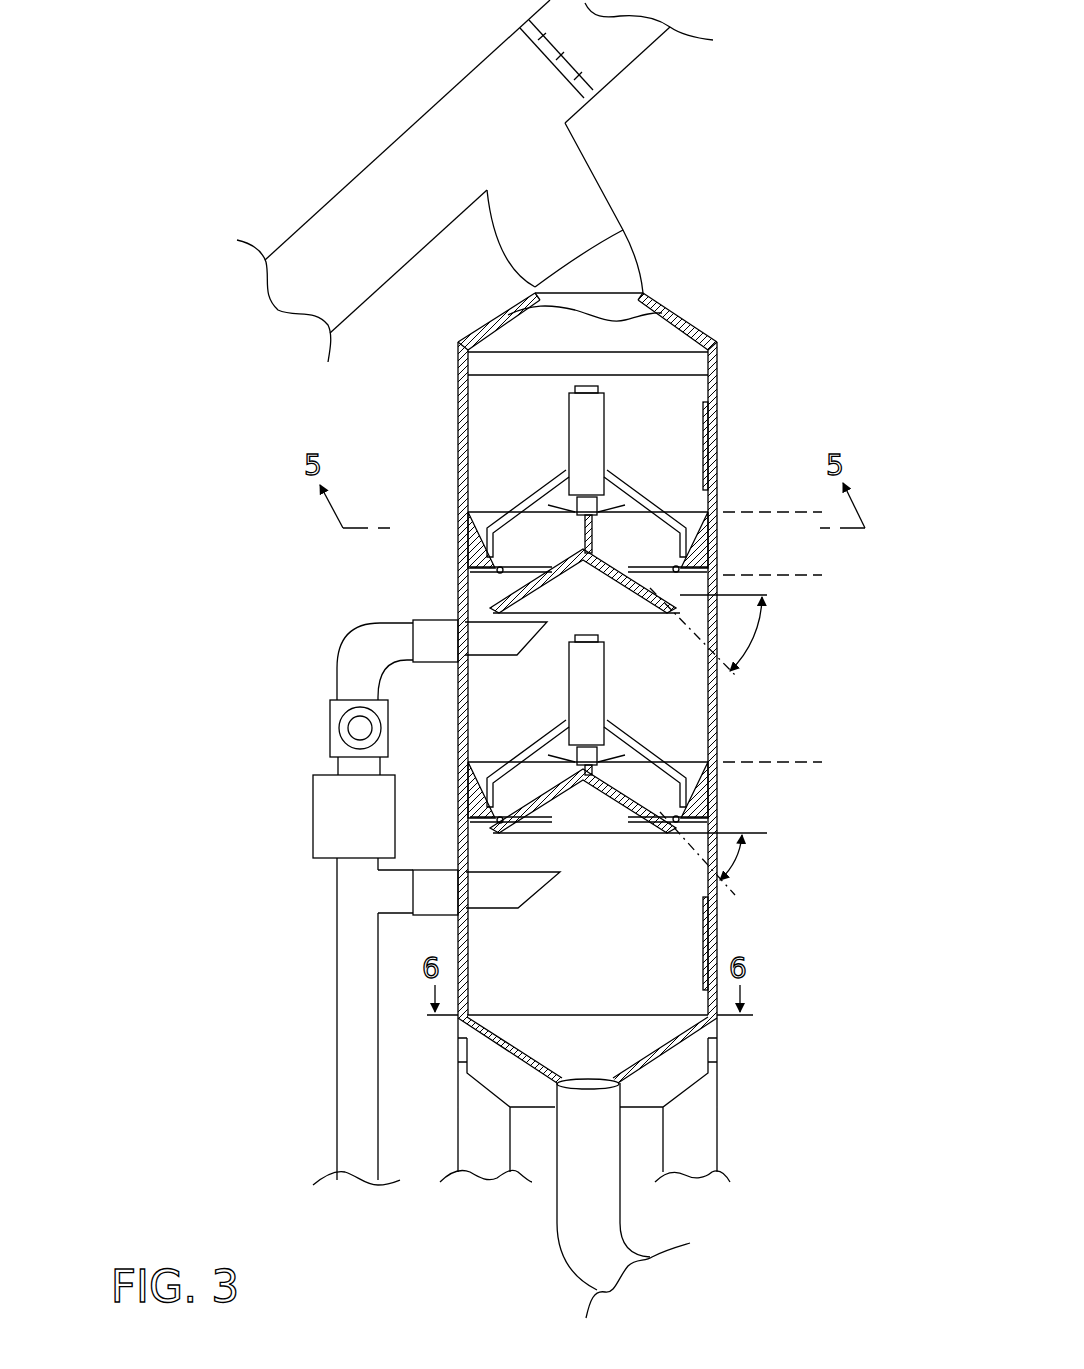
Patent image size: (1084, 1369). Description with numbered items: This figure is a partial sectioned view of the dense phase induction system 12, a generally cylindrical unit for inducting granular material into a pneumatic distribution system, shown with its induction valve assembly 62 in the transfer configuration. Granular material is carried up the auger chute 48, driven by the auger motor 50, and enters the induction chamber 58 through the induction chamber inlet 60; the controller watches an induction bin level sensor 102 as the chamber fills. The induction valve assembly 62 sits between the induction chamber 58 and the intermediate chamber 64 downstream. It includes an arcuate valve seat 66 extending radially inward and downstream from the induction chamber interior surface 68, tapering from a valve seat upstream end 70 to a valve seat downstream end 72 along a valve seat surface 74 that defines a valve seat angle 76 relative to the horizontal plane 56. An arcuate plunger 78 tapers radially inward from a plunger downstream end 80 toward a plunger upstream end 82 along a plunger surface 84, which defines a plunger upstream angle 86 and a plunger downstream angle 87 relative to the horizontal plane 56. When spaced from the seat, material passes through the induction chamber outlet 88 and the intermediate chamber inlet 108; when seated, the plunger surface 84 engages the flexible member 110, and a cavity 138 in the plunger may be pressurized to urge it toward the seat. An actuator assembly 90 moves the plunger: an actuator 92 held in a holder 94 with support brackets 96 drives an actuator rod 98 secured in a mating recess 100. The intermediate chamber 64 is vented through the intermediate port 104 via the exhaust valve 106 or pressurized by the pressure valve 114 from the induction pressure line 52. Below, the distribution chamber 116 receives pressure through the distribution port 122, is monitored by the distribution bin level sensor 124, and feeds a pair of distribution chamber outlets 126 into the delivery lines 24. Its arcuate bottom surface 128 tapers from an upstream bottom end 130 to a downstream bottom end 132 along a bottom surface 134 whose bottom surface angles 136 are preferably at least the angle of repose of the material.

The dense phase induction system 12 is at (752, 318).
The delivery lines 24 is at (557, 1245).
The auger chute 48 is at (433, 104).
The auger motor 50 is at (625, 80).
The induction pressure line 52 is at (330, 1047).
The horizontal plane 56 is at (805, 512).
The induction chamber 58 is at (497, 427).
The induction chamber inlet 60 is at (632, 284).
The induction valve assembly 62 is at (487, 498).
The intermediate chamber 64 is at (490, 682).
The arcuate valve seat 66 is at (508, 488).
The induction chamber interior surface 68 is at (472, 374).
The valve seat upstream end 70 is at (714, 520).
The valve seat downstream end 72 is at (714, 583).
The valve seat surface 74 is at (480, 519).
The valve seat angle 76 is at (712, 500).
The arcuate plunger 78 is at (470, 870).
The plunger downstream end 80 is at (468, 603).
The plunger upstream end 82 is at (580, 556).
The plunger surface 84 is at (653, 590).
The plunger upstream angle 86 is at (623, 767).
The plunger downstream angle 87 is at (756, 636).
The induction chamber outlet 88 is at (486, 541).
The actuator assembly 90 is at (557, 460).
The actuator 92 is at (608, 408).
The holder 94 is at (613, 477).
The support brackets 96 is at (528, 500).
The actuator rod 98 is at (568, 708).
The mating recess 100 is at (628, 580).
The induction bin level sensor 102 is at (702, 410).
The intermediate port 104 is at (550, 632).
The exhaust valve 106 is at (330, 727).
The intermediate chamber inlet 108 is at (474, 590).
The flexible member 110 is at (714, 556).
The pressure valve 114 is at (313, 812).
The distribution chamber 116 is at (497, 923).
The distribution port 122 is at (547, 887).
The distribution bin level sensor 124 is at (702, 920).
The distribution chamber outlets 126 is at (598, 1080).
The arcuate bottom surface 128 is at (672, 1060).
The upstream bottom end 130 is at (722, 1020).
The downstream bottom end 132 is at (643, 1100).
The bottom surface 134 is at (605, 1047).
The bottom surface angles 136 is at (528, 1022).
The cavity 138 is at (610, 598).